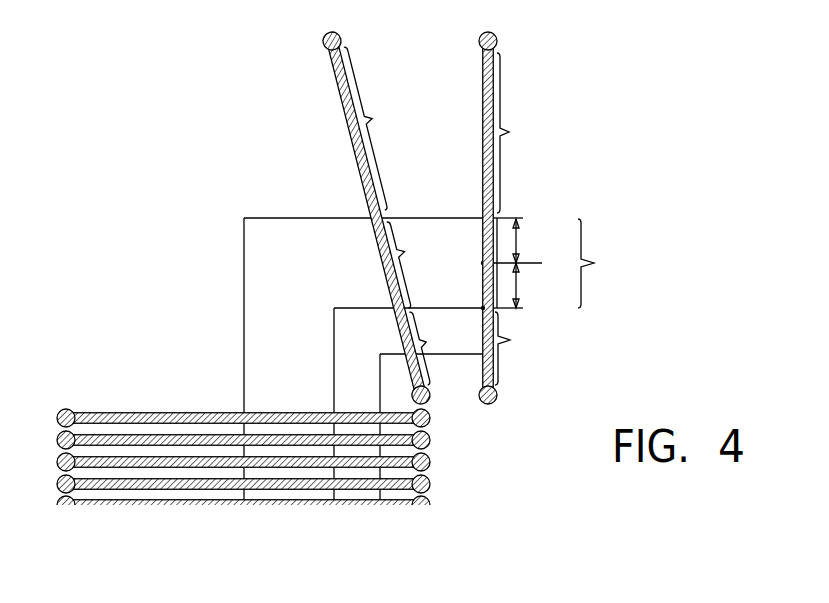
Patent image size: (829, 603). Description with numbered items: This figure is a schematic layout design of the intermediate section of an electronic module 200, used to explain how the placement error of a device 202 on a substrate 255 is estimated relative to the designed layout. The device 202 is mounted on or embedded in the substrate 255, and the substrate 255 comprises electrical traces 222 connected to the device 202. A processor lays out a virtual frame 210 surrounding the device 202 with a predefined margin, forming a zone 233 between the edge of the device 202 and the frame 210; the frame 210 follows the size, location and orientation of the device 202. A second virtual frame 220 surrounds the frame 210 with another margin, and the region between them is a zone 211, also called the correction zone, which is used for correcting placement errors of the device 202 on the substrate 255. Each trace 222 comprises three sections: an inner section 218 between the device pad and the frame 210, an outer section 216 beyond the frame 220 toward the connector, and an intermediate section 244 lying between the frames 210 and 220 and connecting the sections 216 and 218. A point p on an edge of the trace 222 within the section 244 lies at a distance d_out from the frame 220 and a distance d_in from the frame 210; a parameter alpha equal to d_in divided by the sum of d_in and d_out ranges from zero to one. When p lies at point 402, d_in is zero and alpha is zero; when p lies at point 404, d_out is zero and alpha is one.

The electronic module 200 is at (133, 207).
The device 202 is at (504, 493).
The frame 210 is at (334, 382).
The zone 211 is at (304, 306).
The outer section 216 is at (451, 129).
The inner section 218 is at (426, 342).
The frame 220 is at (244, 276).
The electrical trace 222 is at (378, 78).
The zone 233 is at (379, 346).
The intermediate section 244 is at (513, 263).
The substrate 255 is at (261, 183).
The point 402 is at (483, 310).
The point 404 is at (482, 214).